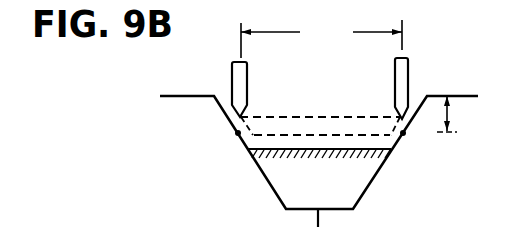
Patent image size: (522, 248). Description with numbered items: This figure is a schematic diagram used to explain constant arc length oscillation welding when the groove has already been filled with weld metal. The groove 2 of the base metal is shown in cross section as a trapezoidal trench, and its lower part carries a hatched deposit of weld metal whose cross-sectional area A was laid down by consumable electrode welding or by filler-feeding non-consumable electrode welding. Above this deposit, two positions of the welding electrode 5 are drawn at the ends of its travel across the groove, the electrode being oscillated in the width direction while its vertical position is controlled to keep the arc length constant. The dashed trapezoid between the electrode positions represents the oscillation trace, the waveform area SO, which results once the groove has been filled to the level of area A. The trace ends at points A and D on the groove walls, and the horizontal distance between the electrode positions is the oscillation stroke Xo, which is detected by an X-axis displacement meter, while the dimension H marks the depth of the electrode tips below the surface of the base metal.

The groove 2 is at (263, 176).
The welding electrode 5 is at (232, 82).
The waveform area SO is at (325, 126).
The cross-sectional area of weld metal A is at (231, 137).
The point D on trench wall D is at (412, 136).
The oscillation stroke Xo is at (321, 39).
The height H is at (451, 114).